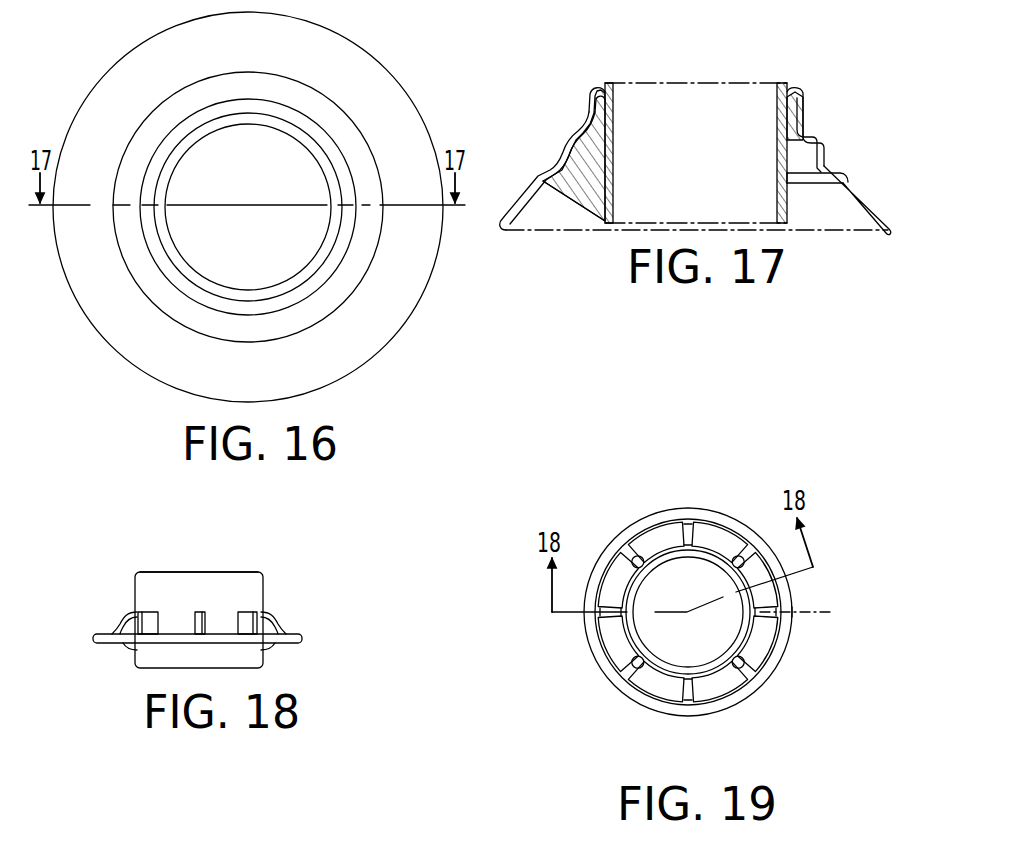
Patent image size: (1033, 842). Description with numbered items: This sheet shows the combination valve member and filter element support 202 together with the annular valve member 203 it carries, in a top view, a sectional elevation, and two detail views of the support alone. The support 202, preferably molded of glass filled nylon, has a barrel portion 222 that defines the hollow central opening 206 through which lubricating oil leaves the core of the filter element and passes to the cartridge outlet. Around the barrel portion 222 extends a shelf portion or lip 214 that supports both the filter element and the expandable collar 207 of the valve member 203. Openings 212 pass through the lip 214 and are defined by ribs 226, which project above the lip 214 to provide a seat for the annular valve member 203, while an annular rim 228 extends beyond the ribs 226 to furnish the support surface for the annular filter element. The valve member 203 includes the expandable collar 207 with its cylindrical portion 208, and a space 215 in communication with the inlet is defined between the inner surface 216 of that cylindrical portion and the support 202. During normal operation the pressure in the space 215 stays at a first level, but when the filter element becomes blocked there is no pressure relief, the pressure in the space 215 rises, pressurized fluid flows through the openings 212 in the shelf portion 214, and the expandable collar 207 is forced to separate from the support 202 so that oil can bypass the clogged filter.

In FIG. 16, the combination valve member and filter element support 202 is at (326, 217).
In FIG. 17, the combination valve member and filter element support 202 is at (620, 93).
In FIG. 18, the combination valve member and filter element support 202 is at (134, 570).
In FIG. 19, the combination valve member and filter element support 202 is at (741, 514).
In FIG. 17, the valve member 203 is at (590, 96).
In FIG. 17, the central opening 206 is at (737, 93).
In FIG. 19, the central opening 206 is at (690, 606).
In FIG. 16, the expandable collar 207 is at (345, 157).
In FIG. 17, the expandable collar 207 is at (586, 113).
In FIG. 16, the cylindrical portion 208 is at (148, 235).
In FIG. 17, the cylindrical portion 208 is at (600, 117).
In FIG. 17, the opening 212 is at (793, 177).
In FIG. 19, the opening 212 is at (657, 537).
In FIG. 17, the shelf portion 214 is at (843, 186).
In FIG. 18, the shelf portion 214 is at (298, 638).
In FIG. 17, the space 215 is at (795, 152).
In FIG. 17, the inner surface 216 is at (808, 178).
In FIG. 18, the barrel portion 222 is at (247, 588).
In FIG. 18, the ribs 226 is at (155, 622).
In FIG. 19, the ribs 226 is at (640, 550).
In FIG. 19, the annular rim 228 is at (590, 592).